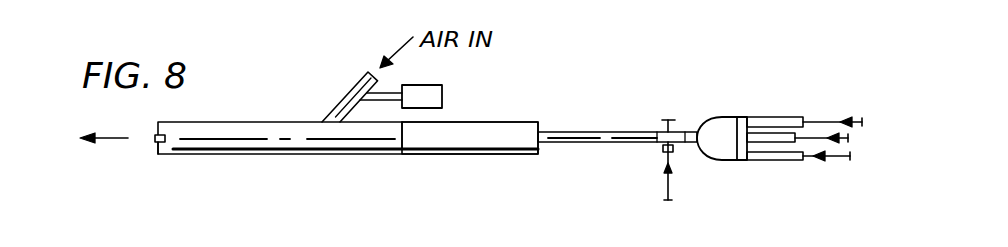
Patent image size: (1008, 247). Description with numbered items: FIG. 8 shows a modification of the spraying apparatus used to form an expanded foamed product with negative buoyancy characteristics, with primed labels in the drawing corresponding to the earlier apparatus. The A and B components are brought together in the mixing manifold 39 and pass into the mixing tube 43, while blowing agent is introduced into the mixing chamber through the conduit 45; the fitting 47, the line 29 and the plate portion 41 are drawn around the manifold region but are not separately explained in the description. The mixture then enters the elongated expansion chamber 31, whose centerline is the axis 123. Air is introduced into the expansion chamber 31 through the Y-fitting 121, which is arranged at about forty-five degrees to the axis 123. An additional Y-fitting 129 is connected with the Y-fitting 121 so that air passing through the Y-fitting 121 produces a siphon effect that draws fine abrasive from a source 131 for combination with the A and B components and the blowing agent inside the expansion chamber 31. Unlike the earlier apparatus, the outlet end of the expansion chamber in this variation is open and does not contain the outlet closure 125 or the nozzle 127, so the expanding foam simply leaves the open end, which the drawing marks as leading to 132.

The nozzle 127 is at (156, 134).
The outlet closure 125 is at (157, 143).
The output to element 132 is at (98, 144).
The axis of the expansion chamber 123 is at (310, 150).
The expansion chamber 31 is at (462, 150).
The Y-fitting 121 is at (352, 92).
The additional Y-fitting 129 is at (387, 85).
The source of fine abrasive 131 is at (443, 91).
The mixing tube 43 is at (593, 143).
The fitting 47 is at (662, 143).
The inlet line 29 is at (673, 106).
The conduit for introducing blowing agent 45 is at (672, 176).
The mixing manifold 39 is at (723, 115).
The nozzle plate 41 is at (742, 160).